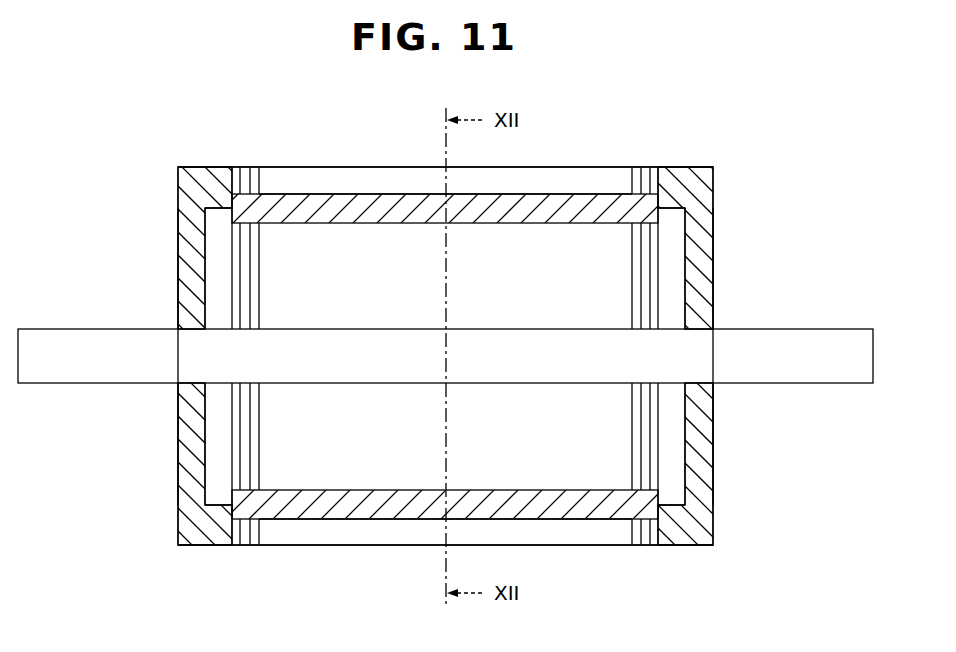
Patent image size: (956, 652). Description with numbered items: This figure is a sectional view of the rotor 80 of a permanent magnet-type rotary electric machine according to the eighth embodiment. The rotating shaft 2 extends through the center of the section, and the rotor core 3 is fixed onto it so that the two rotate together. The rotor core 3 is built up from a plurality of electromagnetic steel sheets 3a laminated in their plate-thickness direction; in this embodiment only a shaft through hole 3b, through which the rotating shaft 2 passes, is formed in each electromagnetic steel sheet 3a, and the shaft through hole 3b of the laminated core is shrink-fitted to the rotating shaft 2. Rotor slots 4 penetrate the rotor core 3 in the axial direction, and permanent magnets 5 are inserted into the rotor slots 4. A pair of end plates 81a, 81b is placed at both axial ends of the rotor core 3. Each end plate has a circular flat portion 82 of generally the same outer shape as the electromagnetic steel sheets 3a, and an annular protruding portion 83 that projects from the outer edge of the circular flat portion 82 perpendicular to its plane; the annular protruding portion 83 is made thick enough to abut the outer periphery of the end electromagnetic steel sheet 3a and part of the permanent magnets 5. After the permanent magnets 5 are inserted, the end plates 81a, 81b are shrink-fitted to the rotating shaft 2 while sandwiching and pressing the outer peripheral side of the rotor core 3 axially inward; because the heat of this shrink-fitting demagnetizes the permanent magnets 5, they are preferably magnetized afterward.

The housing 80 is at (704, 132).
The end plate 81a is at (177, 172).
The end plate 81b is at (717, 172).
The circular flat portion 82 is at (187, 272).
The annular protruding portion 83 is at (219, 180).
The rotating shaft 2 is at (833, 346).
The rotor core 3 is at (303, 180).
The electromagnetic steel sheet 3a is at (257, 167).
The shaft through hole 3b is at (584, 333).
The rotor slot 4 is at (399, 197).
The permanent magnet 5 is at (352, 206).